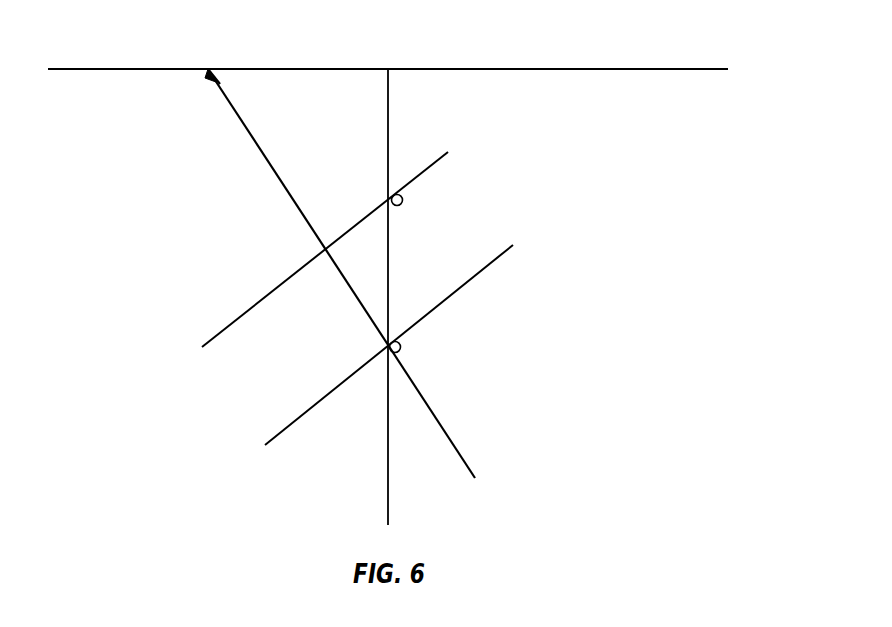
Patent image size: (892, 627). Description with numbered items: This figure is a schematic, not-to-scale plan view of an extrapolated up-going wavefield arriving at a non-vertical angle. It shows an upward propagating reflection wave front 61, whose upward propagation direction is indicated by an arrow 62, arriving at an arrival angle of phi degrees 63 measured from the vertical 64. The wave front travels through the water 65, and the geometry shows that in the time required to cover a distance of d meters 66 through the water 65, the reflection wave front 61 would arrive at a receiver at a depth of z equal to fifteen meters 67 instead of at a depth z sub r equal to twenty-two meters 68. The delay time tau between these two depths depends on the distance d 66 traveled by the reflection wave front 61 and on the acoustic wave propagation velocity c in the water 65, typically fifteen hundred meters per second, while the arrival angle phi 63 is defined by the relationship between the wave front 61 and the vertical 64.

The reflection wave front 61 is at (445, 160).
The arrow 62 is at (243, 118).
The arrival angle φ 63 is at (364, 288).
The vertical 64 is at (388, 492).
The water 65 is at (108, 139).
The distance d 66 is at (330, 308).
The receiver depth z=15 meters 67 is at (397, 206).
The receiver depth z_r=22 meters 68 is at (400, 351).